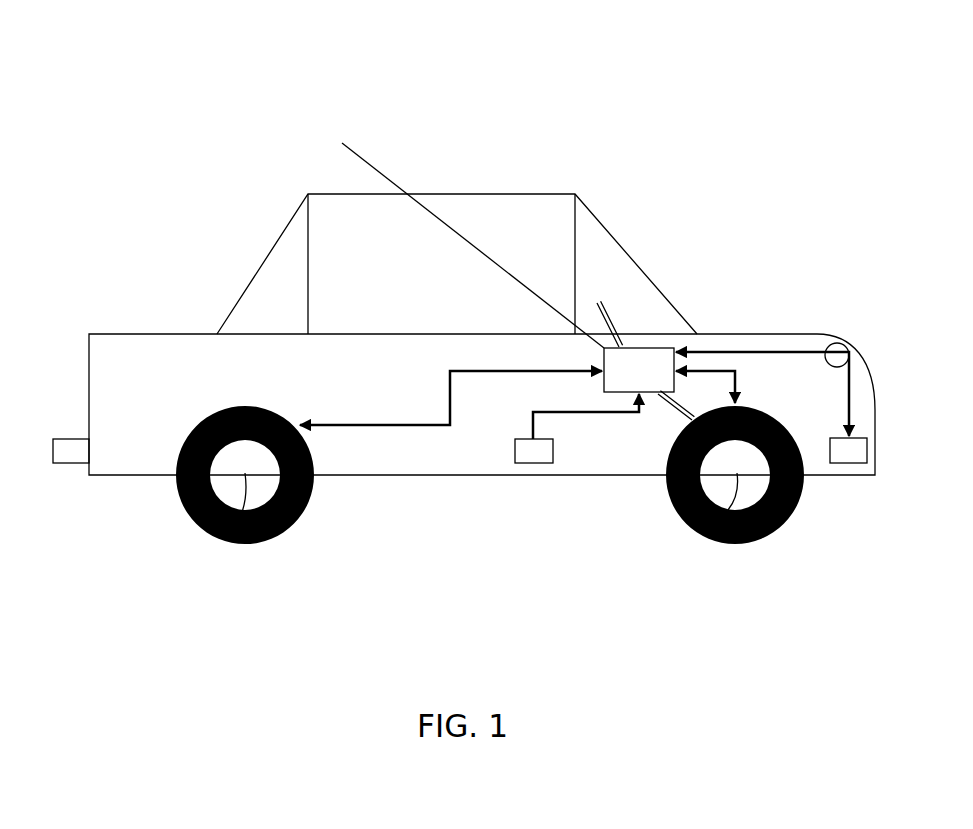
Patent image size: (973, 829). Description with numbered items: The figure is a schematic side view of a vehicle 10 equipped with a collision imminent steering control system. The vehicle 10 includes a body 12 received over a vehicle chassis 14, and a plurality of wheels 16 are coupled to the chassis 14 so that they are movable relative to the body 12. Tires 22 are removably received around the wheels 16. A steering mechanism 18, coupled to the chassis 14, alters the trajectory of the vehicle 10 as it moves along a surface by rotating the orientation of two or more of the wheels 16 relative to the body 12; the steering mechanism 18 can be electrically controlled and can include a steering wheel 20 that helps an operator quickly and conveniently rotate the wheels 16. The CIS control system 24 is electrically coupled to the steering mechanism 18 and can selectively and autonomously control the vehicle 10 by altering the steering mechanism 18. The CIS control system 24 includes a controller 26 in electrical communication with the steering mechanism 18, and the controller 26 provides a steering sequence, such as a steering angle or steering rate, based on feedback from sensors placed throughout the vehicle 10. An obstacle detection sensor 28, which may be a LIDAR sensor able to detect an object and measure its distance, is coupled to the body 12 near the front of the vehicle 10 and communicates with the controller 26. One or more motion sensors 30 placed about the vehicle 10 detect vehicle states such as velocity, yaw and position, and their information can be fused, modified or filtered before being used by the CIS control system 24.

The vehicle 10 is at (606, 86).
The body 12 is at (150, 334).
The vehicle chassis 14 is at (377, 477).
The wheels 16 is at (217, 537).
The steering mechanism 18 is at (672, 403).
The steering wheel 20 is at (597, 303).
The tires 22 is at (247, 543).
The collision imminent steering (CIS) control system 24 is at (658, 332).
The controller 26 is at (461, 235).
The obstacle detection sensor 28 is at (870, 450).
The motion sensors 30 is at (533, 462).